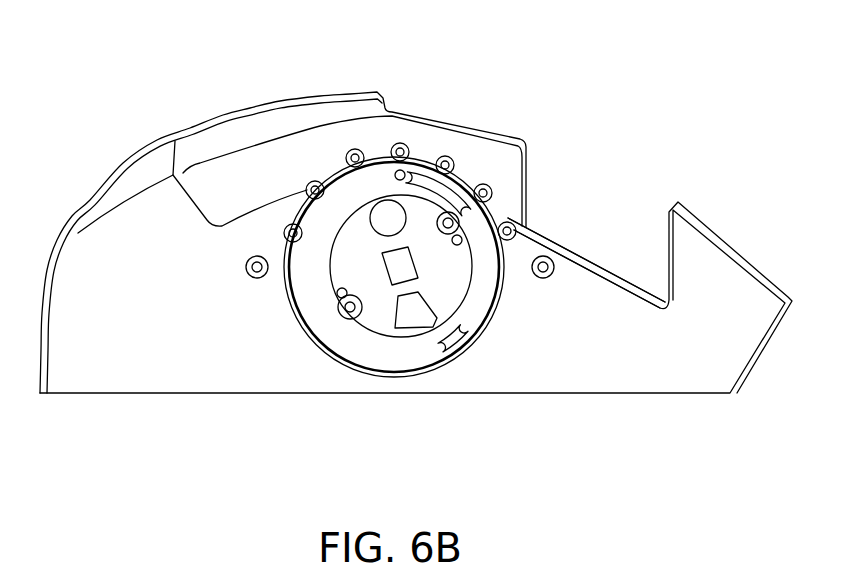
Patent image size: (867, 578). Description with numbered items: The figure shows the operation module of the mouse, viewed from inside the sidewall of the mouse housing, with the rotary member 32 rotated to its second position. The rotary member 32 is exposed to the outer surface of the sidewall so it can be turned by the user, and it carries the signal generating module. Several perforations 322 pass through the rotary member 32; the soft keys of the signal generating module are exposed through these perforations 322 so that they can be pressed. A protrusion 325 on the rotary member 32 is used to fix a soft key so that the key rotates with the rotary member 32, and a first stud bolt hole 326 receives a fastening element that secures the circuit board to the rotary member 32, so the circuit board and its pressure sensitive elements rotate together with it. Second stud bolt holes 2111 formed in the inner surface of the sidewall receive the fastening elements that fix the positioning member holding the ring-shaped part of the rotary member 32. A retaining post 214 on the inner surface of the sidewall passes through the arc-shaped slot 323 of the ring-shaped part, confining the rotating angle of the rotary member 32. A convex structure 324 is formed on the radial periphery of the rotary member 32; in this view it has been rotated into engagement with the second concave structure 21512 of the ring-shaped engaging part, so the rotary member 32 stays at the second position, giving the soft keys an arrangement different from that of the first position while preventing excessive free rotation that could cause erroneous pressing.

The rotary member 32 is at (418, 348).
The retaining post 214 is at (400, 173).
The perforation 322 is at (388, 217).
The arc-shaped slot 323 is at (417, 313).
The convex structure 324 is at (462, 240).
The protrusion 325 is at (337, 298).
The first stud bolt hole 326 is at (450, 223).
The second stud bolt hole 2111 is at (257, 278).
The second concave structure 21512 is at (513, 236).